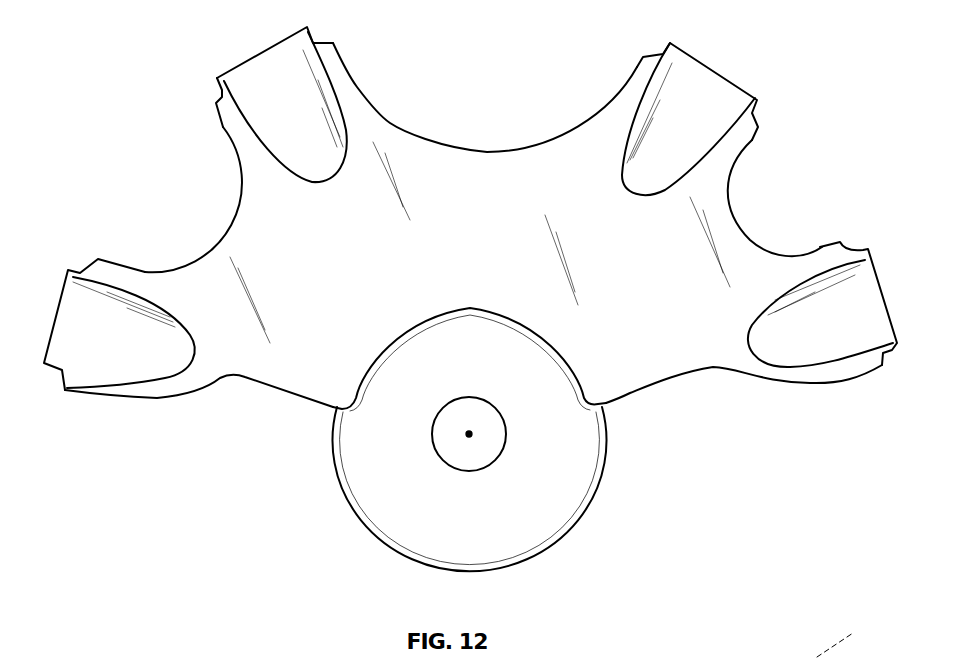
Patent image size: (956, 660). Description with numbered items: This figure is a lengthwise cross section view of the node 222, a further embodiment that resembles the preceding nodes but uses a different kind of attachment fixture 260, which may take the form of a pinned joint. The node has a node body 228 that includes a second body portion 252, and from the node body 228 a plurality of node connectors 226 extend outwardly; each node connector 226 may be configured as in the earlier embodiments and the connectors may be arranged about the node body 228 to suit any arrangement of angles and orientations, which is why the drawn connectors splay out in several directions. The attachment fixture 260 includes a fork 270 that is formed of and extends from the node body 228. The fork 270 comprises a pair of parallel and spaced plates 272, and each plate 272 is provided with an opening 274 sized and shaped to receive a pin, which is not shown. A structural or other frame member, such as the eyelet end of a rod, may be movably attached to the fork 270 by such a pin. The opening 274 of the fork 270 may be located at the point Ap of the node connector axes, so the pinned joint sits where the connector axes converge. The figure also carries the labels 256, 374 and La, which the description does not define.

The node 222 is at (510, 112).
The node connectors 226 is at (221, 129).
The node body 228 is at (646, 351).
The second body portion 252 is at (290, 386).
The upper surface 256 is at (508, 196).
The attachment fixture 260 is at (616, 544).
The fork 270 is at (541, 546).
The plates 272 is at (568, 492).
The opening 274 is at (479, 428).
The point of the node connector axes Ap is at (468, 434).
The shaft 374 is at (702, 659).
The axis La is at (813, 658).